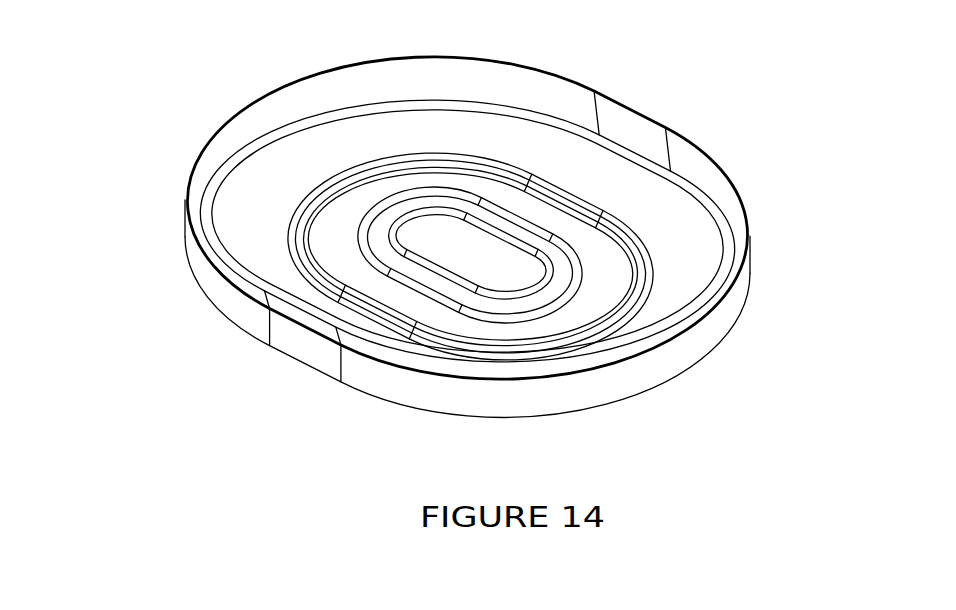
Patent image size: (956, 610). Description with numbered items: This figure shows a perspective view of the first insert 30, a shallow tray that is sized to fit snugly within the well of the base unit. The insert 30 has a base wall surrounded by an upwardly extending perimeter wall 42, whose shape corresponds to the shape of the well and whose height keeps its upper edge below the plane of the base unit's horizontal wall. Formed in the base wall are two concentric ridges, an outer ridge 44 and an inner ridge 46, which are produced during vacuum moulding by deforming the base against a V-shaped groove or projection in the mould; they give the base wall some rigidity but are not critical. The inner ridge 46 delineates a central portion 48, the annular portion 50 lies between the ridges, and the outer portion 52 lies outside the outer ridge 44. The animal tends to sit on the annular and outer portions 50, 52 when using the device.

The first insert 30 is at (697, 128).
The perimeter wall 42 is at (707, 342).
The outer ridge 44 is at (657, 273).
The inner ridge 46 is at (528, 222).
The central portion 48 is at (443, 238).
The annular portion 50 is at (350, 212).
The outer portion 52 is at (263, 190).